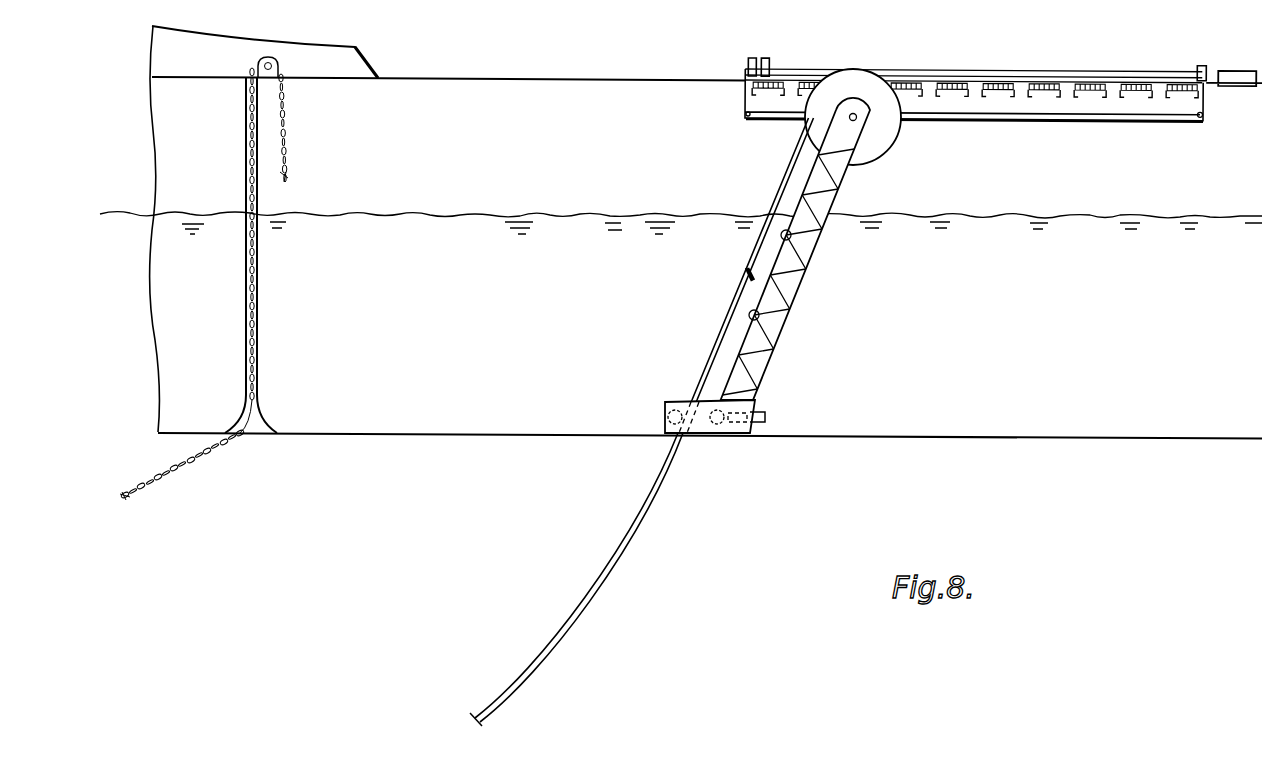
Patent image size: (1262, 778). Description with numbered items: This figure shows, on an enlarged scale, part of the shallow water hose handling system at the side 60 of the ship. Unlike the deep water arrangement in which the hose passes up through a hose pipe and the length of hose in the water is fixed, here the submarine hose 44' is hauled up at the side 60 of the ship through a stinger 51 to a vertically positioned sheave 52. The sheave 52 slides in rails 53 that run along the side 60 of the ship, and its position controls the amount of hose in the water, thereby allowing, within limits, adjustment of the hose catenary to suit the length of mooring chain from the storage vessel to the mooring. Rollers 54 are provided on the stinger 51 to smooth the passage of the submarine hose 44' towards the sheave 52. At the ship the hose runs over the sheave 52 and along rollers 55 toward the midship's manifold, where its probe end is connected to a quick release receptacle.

The submarine hose 44' is at (728, 383).
The stinger 51 is at (790, 322).
The sheave 52 is at (873, 153).
The rails 53 is at (775, 118).
The rollers 54 is at (754, 315).
The rollers 55 is at (1032, 82).
The side of the ship 60 is at (1040, 345).